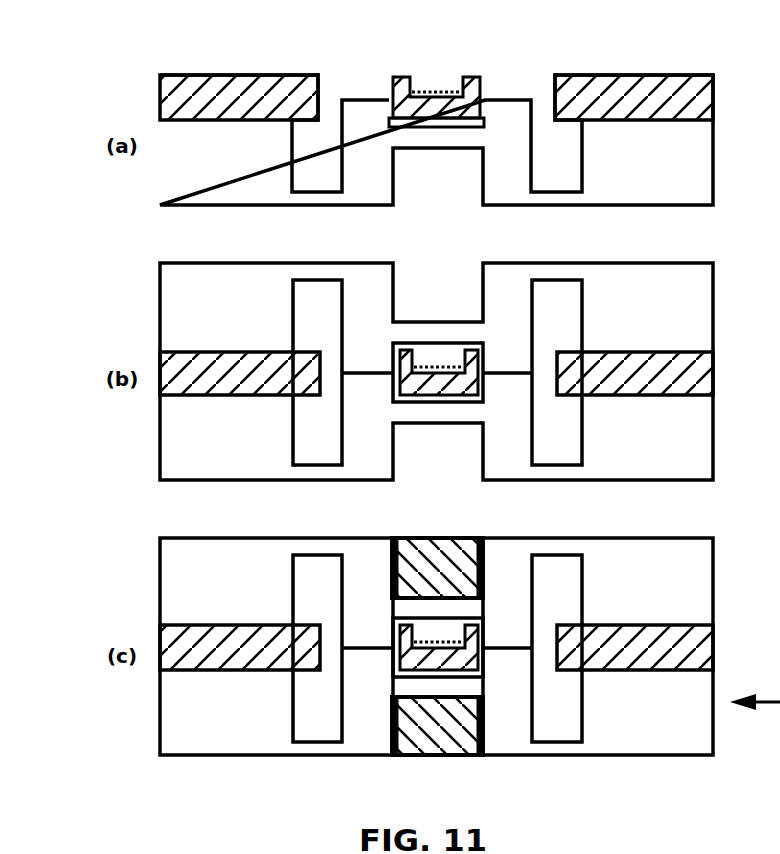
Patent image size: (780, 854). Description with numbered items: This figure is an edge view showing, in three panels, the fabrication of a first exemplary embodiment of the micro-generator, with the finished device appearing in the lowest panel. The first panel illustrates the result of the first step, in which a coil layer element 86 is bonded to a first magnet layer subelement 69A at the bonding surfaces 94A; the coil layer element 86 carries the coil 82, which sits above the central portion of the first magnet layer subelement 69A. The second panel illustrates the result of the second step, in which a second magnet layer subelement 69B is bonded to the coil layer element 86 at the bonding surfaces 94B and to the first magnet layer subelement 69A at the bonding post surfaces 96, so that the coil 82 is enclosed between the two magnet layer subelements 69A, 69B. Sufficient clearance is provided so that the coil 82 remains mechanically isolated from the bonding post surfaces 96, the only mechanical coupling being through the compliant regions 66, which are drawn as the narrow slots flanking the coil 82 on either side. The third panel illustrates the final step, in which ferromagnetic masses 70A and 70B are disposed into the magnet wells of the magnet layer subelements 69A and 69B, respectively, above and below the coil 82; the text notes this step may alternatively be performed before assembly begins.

The compliant regions 66 is at (317, 192).
The first magnet layer subelement 69A is at (680, 183).
The second magnet layer subelement 69B is at (692, 283).
The ferromagnetic mass 70A is at (420, 543).
The ferromagnetic mass 70B is at (423, 748).
The coil 82 is at (432, 90).
The coil layer element 86 is at (668, 73).
The bonding surfaces 94A is at (207, 120).
The bonding surfaces 94B is at (222, 352).
The bonding post surfaces 96 is at (363, 368).